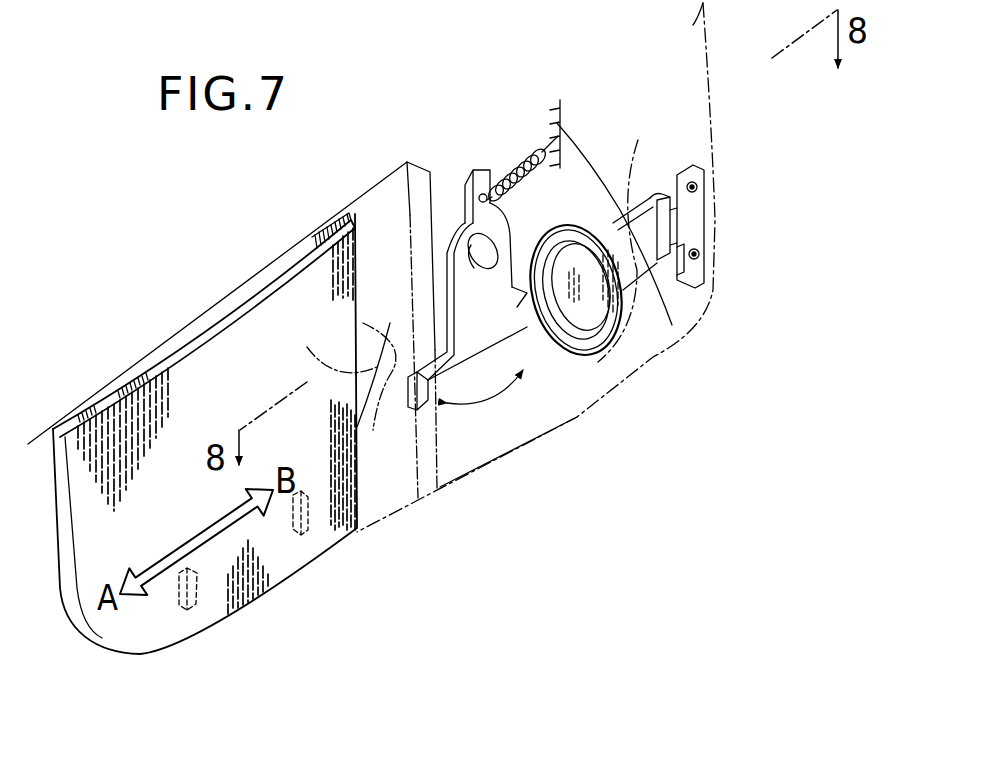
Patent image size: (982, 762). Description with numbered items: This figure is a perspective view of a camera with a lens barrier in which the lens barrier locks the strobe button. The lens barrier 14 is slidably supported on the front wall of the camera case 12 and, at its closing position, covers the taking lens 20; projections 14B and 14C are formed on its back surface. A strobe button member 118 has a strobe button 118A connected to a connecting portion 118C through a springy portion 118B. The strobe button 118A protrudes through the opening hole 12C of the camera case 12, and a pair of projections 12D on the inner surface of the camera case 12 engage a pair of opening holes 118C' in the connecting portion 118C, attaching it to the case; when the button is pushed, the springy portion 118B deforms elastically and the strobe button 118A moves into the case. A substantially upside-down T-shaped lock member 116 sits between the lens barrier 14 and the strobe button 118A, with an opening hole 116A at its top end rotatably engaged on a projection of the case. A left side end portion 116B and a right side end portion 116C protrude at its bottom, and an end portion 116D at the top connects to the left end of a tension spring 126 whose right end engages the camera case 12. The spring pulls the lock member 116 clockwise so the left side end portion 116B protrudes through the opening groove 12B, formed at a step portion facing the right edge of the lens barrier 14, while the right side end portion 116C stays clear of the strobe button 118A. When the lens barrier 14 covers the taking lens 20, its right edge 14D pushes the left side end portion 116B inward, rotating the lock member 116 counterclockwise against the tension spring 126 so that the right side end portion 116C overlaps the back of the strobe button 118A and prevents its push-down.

The camera case 12 is at (703, 100).
The opening groove 12B is at (417, 365).
The opening hole 12C is at (642, 240).
The projections 12D is at (700, 190).
The lens barrier 14 is at (188, 380).
The projection 14B is at (300, 517).
The projection 14C is at (192, 587).
The right edge 14D is at (358, 265).
The taking lens 20 is at (334, 344).
The lock member 116 is at (470, 323).
The opening hole 116A is at (497, 242).
The left side end portion 116B is at (394, 470).
The right side end portion 116C is at (517, 307).
The end portion 116D is at (477, 170).
The strobe button member 118 is at (616, 334).
The strobe button 118A is at (568, 358).
The springy portion 118B is at (681, 289).
The connecting portion 118C is at (736, 226).
The opening holes 118C' is at (750, 240).
The tension spring 126 is at (558, 118).